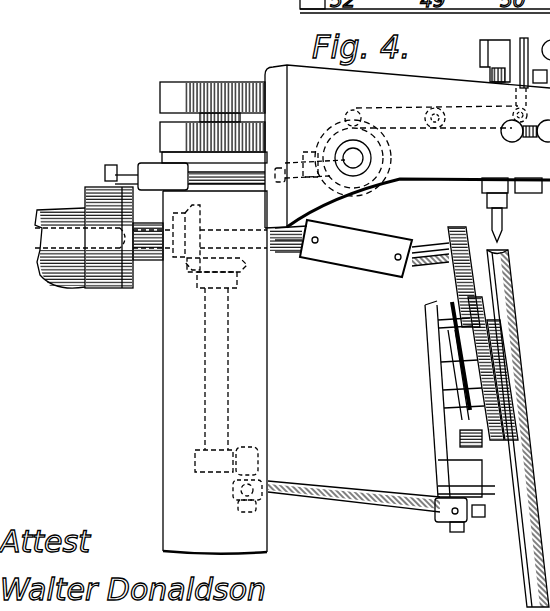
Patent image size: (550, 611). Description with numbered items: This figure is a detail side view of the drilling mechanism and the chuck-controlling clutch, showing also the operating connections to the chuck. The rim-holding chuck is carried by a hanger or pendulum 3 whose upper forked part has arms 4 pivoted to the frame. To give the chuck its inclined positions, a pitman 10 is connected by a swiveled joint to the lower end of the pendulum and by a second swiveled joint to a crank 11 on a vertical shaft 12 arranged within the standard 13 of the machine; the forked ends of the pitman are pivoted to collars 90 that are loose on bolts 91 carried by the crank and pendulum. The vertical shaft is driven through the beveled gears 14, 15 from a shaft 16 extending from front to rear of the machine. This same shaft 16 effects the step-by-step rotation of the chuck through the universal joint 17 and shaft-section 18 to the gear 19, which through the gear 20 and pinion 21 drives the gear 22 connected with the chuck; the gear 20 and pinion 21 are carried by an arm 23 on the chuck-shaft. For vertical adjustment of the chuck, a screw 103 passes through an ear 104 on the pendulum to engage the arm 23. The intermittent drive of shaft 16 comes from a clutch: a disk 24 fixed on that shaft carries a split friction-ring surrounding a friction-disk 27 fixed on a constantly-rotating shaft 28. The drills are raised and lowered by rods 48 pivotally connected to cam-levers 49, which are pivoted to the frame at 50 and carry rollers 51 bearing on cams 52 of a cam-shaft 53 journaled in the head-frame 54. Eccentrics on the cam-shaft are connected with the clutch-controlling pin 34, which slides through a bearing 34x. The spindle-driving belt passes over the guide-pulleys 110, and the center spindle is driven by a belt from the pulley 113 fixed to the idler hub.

The pendulum 3 is at (435, 396).
The arms 4 is at (549, 297).
The pitman 10 is at (358, 497).
The crank 11 is at (259, 462).
The vertical shaft 12 is at (204, 397).
The standard 13 is at (163, 374).
The beveled gear 14 is at (238, 270).
The beveled gear 15 is at (200, 226).
The shaft 16 is at (167, 253).
The universal joint 17 is at (352, 256).
The shaft-section 18 is at (418, 247).
The gear 19 is at (460, 219).
The gear 20 is at (460, 293).
The pinion 21 is at (455, 316).
The gear 22 is at (470, 346).
The arm 23 is at (458, 401).
The disk 24 is at (126, 286).
The friction-disk 27 is at (88, 284).
The constantly-rotating shaft 28 is at (95, 226).
The clutch-controlling pin 34 is at (128, 163).
The bearing 34x is at (190, 220).
The rods 48 is at (515, 72).
The cam-lever 49 is at (410, 100).
The pivot 50 is at (437, 121).
The roller 51 is at (352, 113).
The cam 52 is at (392, 158).
The cam-shaft 53 is at (356, 165).
The head-frame 54 is at (516, 181).
The collar 90 is at (233, 491).
The bolt 91 is at (262, 471).
The screw 103 is at (468, 461).
The ear 104 is at (470, 488).
The guide-pulleys 110 is at (213, 138).
The pulley 113 is at (246, 82).